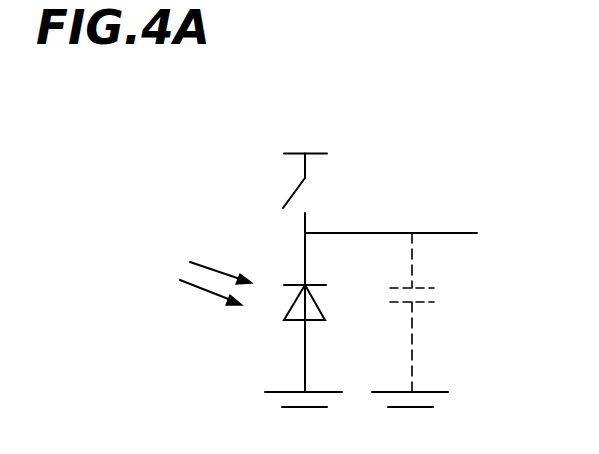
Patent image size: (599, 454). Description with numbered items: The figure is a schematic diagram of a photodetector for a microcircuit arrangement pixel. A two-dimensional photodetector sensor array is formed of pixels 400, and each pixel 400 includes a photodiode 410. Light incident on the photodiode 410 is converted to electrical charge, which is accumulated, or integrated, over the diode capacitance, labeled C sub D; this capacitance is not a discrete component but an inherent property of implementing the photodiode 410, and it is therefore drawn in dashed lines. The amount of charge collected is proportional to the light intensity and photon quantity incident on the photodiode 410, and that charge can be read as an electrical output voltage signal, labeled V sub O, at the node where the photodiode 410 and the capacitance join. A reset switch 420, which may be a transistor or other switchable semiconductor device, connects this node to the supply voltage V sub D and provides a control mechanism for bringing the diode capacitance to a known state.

The pixel 400 is at (165, 188).
The photodiode 410 is at (315, 323).
The reset switch 420 is at (297, 190).